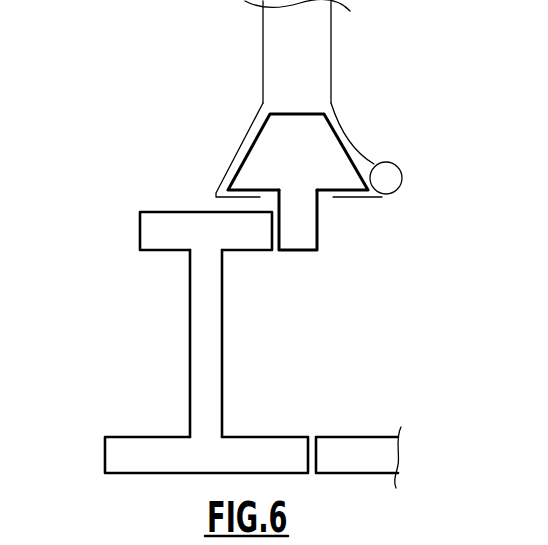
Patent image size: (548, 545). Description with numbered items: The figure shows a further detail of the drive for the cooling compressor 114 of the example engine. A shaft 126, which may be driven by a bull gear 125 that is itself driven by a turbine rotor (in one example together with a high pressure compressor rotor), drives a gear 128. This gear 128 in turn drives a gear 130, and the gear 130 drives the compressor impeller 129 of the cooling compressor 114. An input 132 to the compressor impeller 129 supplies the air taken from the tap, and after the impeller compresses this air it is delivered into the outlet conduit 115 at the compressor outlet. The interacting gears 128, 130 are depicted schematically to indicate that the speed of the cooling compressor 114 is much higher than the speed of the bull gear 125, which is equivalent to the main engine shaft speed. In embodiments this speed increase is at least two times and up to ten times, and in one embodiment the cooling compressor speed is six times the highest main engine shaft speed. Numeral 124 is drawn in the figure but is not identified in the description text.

The cooling compressor 114 is at (393, 100).
The outlet conduit 115 is at (396, 178).
The bottom flange 124 is at (132, 455).
The bull gear 125 is at (352, 447).
The shaft 126 is at (212, 373).
The gear 128 is at (170, 228).
The compressor impeller 129 is at (273, 153).
The gear 130 is at (310, 233).
The input 132 is at (307, 43).